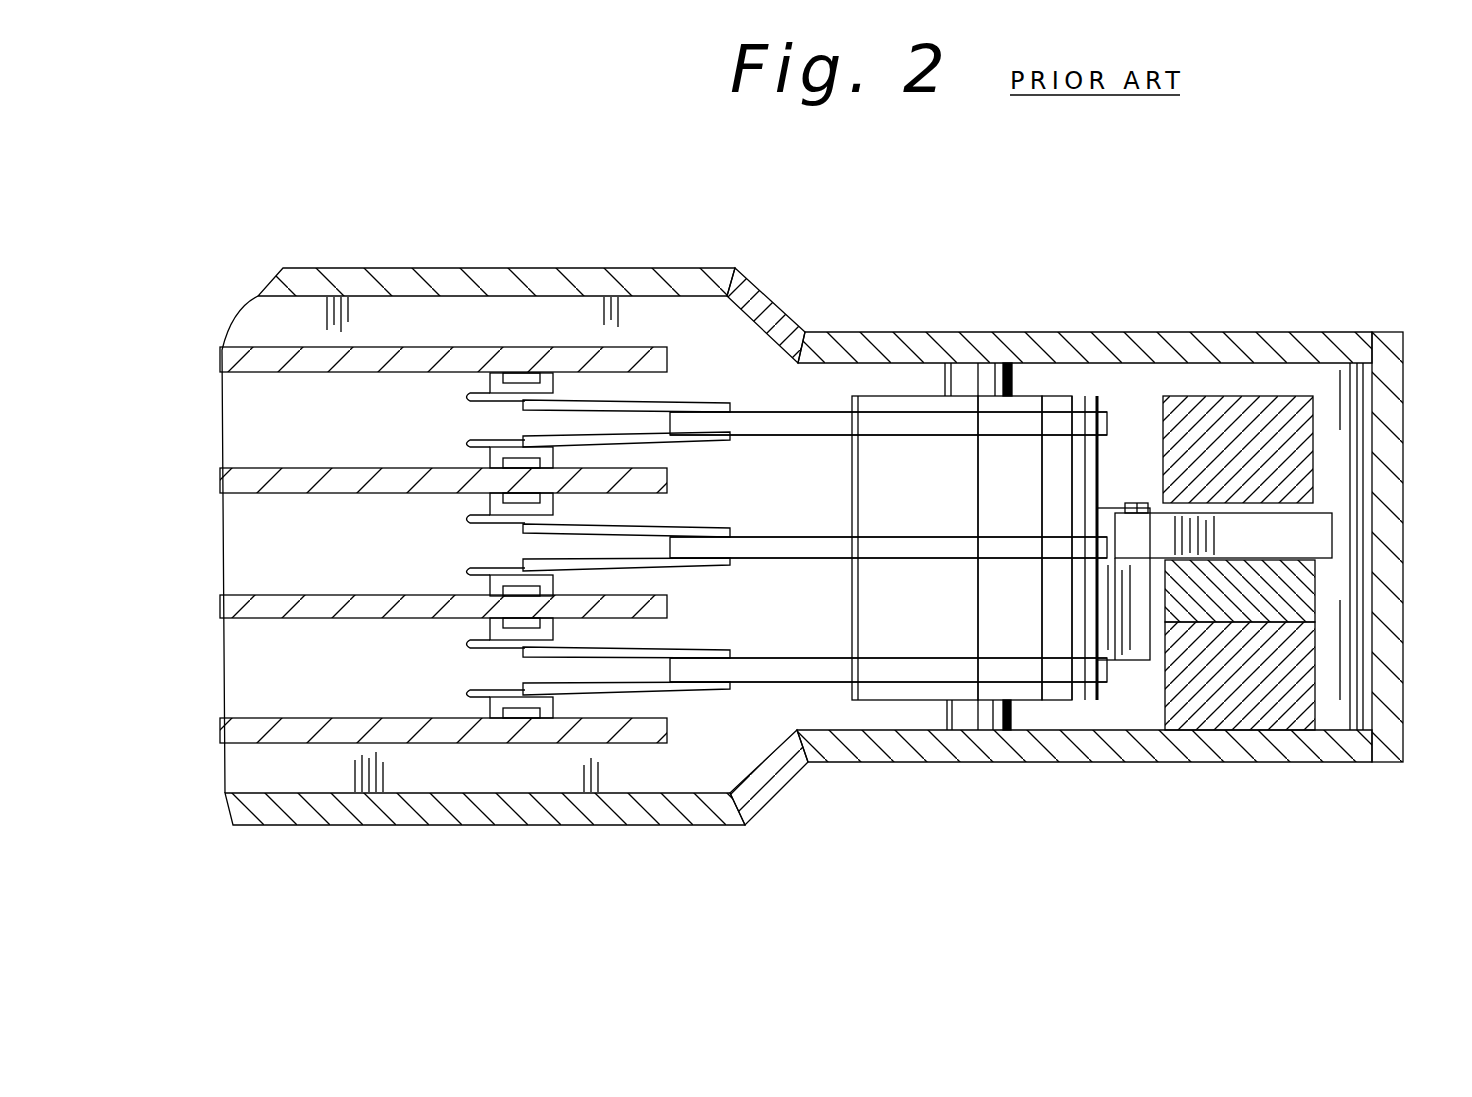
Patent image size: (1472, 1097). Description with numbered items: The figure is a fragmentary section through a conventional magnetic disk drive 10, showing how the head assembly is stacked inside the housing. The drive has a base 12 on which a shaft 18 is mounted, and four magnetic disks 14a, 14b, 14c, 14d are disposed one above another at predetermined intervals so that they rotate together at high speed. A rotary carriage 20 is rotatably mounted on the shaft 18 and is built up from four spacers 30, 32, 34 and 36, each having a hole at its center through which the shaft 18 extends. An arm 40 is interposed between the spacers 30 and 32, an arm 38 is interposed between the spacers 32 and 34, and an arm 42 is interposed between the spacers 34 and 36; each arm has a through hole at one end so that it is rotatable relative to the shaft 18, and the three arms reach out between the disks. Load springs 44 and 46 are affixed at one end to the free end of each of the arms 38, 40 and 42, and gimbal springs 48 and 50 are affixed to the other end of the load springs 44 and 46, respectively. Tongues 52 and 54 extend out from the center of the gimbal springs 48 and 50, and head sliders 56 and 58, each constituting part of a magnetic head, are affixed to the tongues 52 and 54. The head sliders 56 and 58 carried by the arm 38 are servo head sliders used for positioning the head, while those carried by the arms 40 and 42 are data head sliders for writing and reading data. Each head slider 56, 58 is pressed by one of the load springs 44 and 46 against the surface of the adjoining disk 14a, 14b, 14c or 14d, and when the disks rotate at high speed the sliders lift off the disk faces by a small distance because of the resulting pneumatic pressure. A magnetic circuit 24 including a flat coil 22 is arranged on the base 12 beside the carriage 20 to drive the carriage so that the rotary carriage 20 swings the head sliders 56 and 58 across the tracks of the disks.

The disk drive 10 is at (1160, 232).
The base 12 is at (1405, 755).
The magnetic disk 14a is at (262, 348).
The magnetic disk 14b is at (262, 468).
The magnetic disk 14c is at (262, 595).
The magnetic disk 14d is at (265, 717).
The shaft 18 is at (986, 378).
The rotary carriage 20 is at (900, 388).
The flat coil 22 is at (1317, 538).
The magnetic circuit 24 is at (1300, 388).
The spacer 30 is at (1060, 402).
The spacer 32 is at (1055, 502).
The spacer 34 is at (1060, 643).
The spacer 36 is at (1027, 688).
The arm 38 is at (770, 528).
The arm 40 is at (757, 412).
The arm 42 is at (787, 658).
The load spring 44 is at (670, 397).
The load spring 46 is at (673, 441).
The gimbal spring 48 is at (578, 401).
The gimbal spring 50 is at (580, 447).
The tongue 52 is at (468, 394).
The tongue 54 is at (470, 443).
The head slider 56 is at (490, 381).
The head slider 58 is at (490, 461).